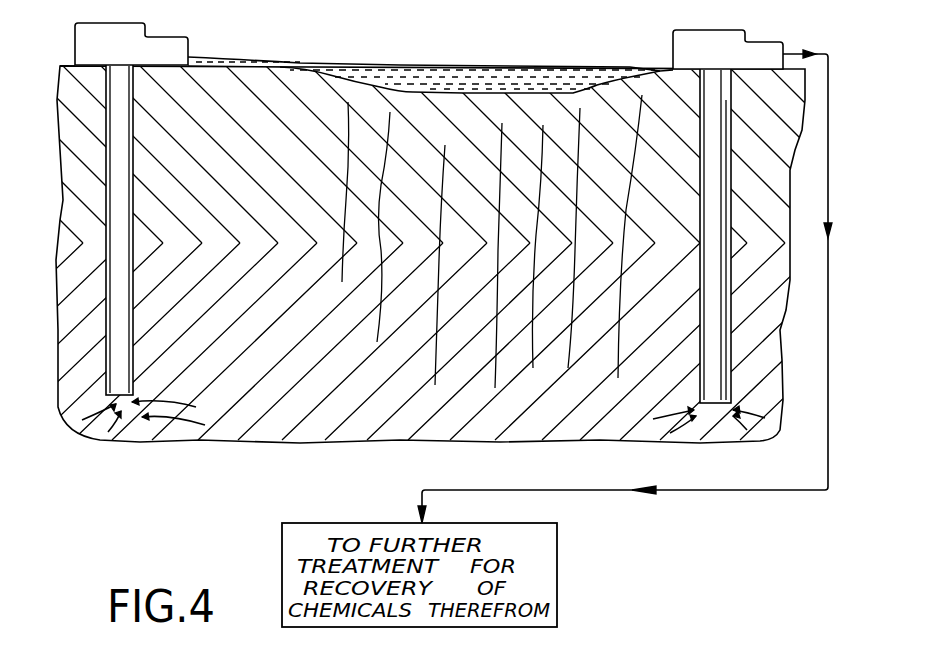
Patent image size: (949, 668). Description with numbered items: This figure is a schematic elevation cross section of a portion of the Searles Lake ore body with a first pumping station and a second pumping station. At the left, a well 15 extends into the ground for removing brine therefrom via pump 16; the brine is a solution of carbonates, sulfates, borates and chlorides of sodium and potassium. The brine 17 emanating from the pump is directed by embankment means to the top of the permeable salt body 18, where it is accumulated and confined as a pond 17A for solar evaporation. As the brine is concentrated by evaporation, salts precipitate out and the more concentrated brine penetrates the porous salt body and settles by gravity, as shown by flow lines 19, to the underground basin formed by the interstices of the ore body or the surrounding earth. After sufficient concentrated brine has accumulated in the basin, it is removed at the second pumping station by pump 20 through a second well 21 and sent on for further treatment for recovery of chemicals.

The well 15 is at (106, 207).
The pump 16 is at (76, 36).
The brine 17 is at (226, 58).
The pond 17A is at (370, 64).
The permeable salt body 18 is at (506, 88).
The flow lines 19 is at (575, 278).
The pump 20 is at (762, 44).
The recovery well 21 is at (722, 297).